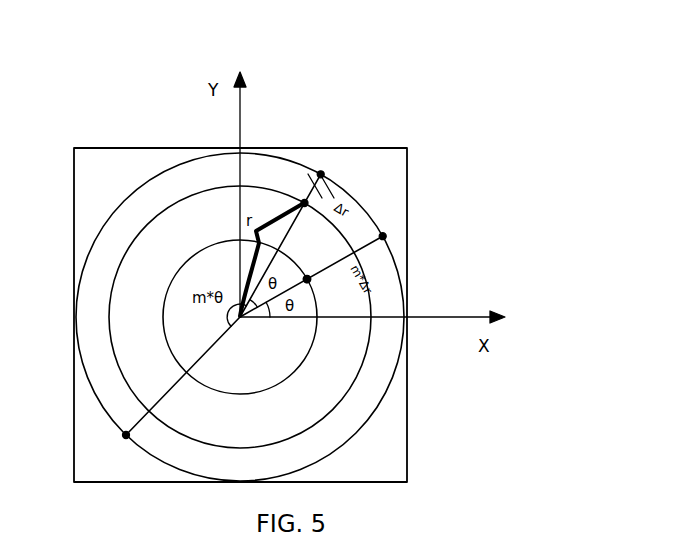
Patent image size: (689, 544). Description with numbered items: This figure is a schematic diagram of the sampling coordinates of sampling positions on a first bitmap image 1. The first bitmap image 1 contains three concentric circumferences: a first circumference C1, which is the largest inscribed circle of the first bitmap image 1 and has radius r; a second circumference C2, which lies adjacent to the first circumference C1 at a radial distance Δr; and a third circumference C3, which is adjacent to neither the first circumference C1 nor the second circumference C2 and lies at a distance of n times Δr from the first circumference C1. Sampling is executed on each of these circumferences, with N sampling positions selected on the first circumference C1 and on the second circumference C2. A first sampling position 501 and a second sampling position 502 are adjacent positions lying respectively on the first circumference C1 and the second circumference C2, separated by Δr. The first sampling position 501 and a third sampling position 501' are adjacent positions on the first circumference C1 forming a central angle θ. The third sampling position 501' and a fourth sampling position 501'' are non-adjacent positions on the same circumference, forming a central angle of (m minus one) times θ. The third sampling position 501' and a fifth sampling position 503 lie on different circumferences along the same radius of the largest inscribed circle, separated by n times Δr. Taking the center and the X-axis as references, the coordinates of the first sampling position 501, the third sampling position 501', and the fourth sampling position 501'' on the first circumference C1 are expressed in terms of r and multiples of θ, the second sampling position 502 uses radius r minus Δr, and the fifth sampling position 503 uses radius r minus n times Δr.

The first bitmap image 1 is at (389, 448).
The first sampling position 501 is at (282, 203).
The third sampling position 501' is at (370, 224).
The fourth sampling position 501'' is at (189, 378).
The second sampling position 502 is at (303, 200).
The fifth sampling position 503 is at (311, 284).
The first circumference C1 is at (400, 275).
The second circumference C2 is at (355, 380).
The third circumference C3 is at (207, 244).